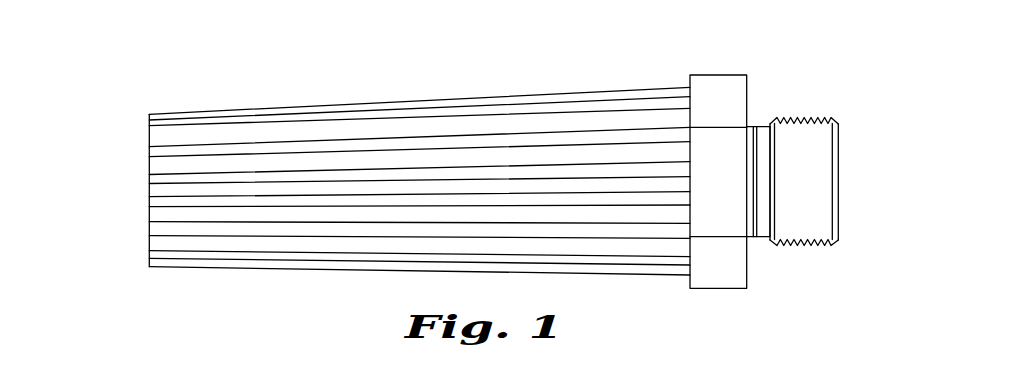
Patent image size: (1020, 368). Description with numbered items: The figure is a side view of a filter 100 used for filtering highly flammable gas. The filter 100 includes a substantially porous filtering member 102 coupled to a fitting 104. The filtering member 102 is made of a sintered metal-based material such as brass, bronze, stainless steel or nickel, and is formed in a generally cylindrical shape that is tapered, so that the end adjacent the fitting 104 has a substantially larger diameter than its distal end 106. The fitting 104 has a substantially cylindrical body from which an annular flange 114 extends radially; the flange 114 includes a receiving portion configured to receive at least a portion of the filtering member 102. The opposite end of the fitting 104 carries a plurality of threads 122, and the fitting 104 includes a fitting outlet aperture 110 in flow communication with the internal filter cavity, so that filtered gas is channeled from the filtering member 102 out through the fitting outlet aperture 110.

The filter 100 is at (110, 145).
The filtering member 102 is at (243, 267).
The fitting 104 is at (765, 293).
The distal end 106 is at (132, 270).
The fitting outlet aperture 110 is at (840, 155).
The flange 114 is at (717, 73).
The threads 122 is at (803, 118).